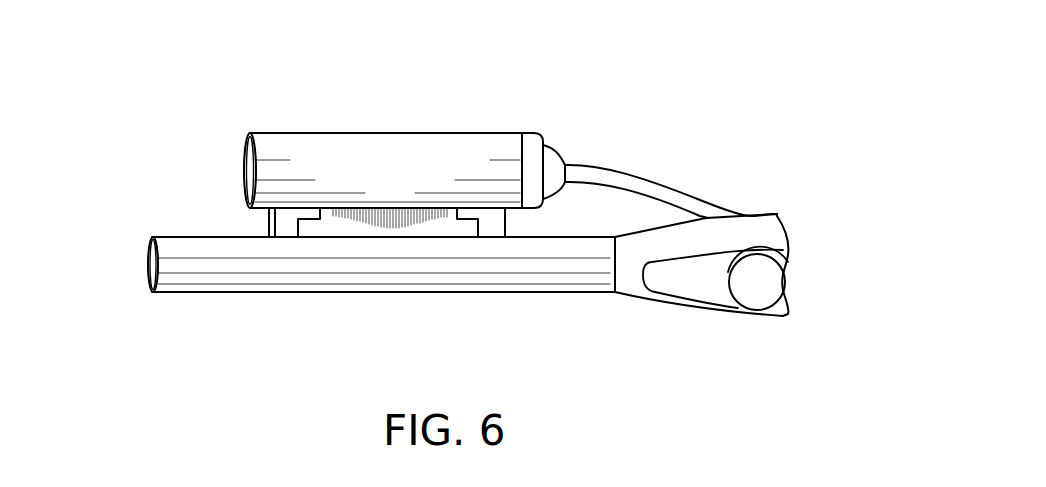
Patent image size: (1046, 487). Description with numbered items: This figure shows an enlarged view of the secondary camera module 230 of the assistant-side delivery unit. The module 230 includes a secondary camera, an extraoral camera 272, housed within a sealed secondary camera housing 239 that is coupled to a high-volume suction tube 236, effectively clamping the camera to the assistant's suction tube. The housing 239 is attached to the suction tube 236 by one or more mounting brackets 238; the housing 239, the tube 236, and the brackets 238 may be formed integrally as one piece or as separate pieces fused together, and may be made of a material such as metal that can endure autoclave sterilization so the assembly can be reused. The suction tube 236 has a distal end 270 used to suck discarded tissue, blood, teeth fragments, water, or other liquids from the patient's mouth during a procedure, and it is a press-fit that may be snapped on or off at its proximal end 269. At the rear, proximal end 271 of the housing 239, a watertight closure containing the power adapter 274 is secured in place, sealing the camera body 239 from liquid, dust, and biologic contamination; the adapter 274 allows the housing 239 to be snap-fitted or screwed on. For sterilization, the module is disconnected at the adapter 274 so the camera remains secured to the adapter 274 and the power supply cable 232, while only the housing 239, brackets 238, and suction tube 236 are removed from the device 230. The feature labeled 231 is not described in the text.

The secondary camera module 230 is at (182, 135).
The secondary camera housing 239 is at (384, 148).
The proximal end of the secondary camera housing 271 is at (522, 146).
The power adapter 274 is at (537, 164).
The secondary camera power supply cable 232 is at (663, 196).
The extraoral camera 272 is at (250, 170).
The mounting brackets 238 is at (285, 225).
The distal end of the high-volume suction tube 270 is at (150, 256).
The high-volume suction tube 236 is at (371, 293).
The proximal end of the suction tube 269 is at (620, 264).
The holder 231 is at (692, 291).